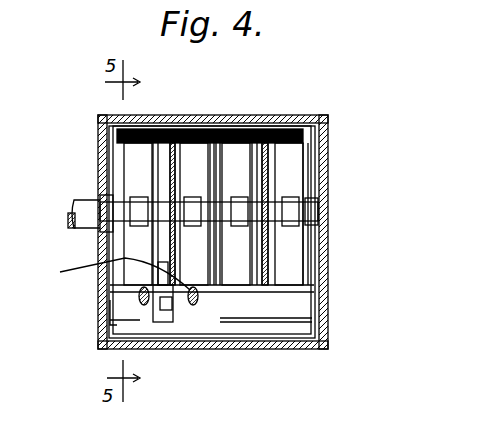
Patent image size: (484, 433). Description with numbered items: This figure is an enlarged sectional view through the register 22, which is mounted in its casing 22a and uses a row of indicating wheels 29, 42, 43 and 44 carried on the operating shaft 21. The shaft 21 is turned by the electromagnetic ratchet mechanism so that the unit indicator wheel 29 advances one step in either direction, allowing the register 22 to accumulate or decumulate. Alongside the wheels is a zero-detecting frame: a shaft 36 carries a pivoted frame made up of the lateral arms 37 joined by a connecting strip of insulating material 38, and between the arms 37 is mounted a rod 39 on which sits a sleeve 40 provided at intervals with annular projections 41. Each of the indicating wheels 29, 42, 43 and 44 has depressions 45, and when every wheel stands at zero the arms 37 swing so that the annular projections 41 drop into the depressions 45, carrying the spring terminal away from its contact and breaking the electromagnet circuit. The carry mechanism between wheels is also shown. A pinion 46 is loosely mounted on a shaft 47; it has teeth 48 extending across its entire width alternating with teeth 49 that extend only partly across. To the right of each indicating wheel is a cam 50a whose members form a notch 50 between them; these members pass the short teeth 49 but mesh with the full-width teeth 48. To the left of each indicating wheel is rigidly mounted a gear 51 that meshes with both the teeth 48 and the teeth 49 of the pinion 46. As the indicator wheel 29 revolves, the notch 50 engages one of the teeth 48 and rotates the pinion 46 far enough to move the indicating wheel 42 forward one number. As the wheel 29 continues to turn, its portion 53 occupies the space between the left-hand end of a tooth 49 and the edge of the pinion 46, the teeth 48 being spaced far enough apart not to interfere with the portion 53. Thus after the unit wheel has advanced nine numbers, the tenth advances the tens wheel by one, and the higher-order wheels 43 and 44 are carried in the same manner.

The operating shaft 21 is at (74, 205).
The register 22 is at (305, 170).
The casing 22a is at (326, 134).
The indicator wheel 29 is at (158, 272).
The shaft 36 is at (108, 322).
The lateral arms 37 is at (110, 244).
The connecting strip of insulating material 38 is at (258, 127).
The rod 39 is at (320, 208).
The sleeve 40 is at (284, 229).
The annular projections 41 is at (70, 226).
The indicating wheel 42 is at (190, 128).
The indicating wheel 43 is at (236, 128).
The indicating wheel 44 is at (297, 128).
The depressions 45 is at (102, 192).
The pinion 46 is at (152, 322).
The shaft 47 is at (133, 320).
The teeth 48 is at (166, 322).
The teeth 49 is at (176, 293).
The notch 50 is at (100, 336).
The cam 50a is at (252, 368).
The gear 51 is at (157, 165).
The portion 53 is at (155, 178).